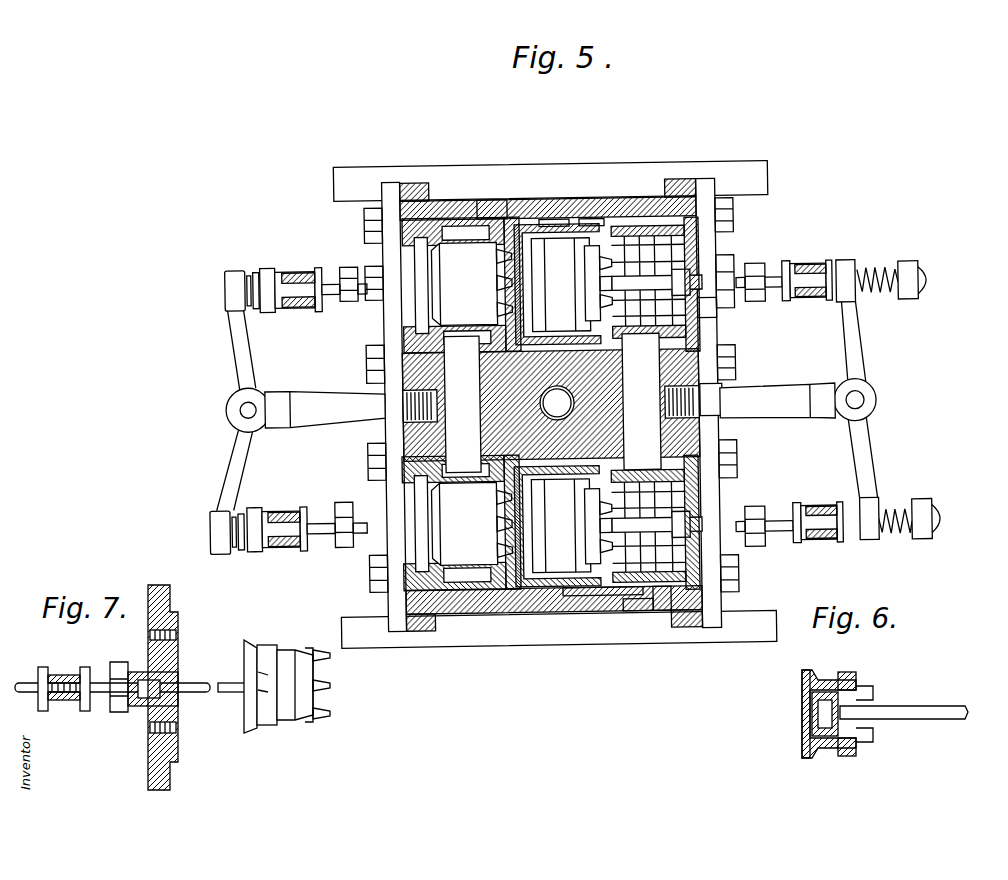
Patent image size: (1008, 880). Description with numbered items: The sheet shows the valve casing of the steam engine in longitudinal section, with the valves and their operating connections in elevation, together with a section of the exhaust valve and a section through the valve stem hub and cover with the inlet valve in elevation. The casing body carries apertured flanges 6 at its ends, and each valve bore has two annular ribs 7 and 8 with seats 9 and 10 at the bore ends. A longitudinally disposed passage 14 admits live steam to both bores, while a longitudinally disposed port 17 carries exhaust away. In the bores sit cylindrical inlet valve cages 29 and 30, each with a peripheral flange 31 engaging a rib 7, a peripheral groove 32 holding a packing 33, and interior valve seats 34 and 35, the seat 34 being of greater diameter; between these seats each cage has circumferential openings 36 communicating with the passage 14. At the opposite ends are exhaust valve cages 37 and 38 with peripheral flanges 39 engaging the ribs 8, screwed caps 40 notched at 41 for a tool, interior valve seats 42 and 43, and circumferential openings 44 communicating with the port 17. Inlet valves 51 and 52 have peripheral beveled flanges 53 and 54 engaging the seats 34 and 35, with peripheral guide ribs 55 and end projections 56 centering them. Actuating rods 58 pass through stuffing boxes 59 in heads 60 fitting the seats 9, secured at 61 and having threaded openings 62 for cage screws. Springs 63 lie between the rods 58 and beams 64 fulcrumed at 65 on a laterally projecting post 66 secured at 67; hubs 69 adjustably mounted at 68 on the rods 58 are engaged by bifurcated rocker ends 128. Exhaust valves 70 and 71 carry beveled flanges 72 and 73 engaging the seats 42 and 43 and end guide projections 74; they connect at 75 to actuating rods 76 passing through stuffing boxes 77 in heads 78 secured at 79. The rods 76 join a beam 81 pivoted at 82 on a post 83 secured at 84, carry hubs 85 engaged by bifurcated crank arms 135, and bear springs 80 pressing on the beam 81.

In FIG. 5, the apertured flanges 6 is at (560, 645).
In FIG. 5, the annular rib 7 is at (513, 600).
In FIG. 5, the annular rib 8 is at (600, 600).
In FIG. 5, the seat 9 is at (412, 632).
In FIG. 5, the seat 10 is at (705, 630).
In FIG. 5, the longitudinally disposed passage 14 is at (551, 405).
In FIG. 5, the longitudinally disposed port 17 is at (666, 313).
In FIG. 5, the inlet valve cage 29 is at (462, 345).
In FIG. 5, the inlet valve cage 30 is at (462, 470).
In FIG. 5, the peripheral flange 31 is at (500, 600).
In FIG. 5, the peripheral groove 32 is at (440, 600).
In FIG. 5, the packing 33 is at (430, 612).
In FIG. 5, the valve seat 34 is at (420, 245).
In FIG. 5, the valve seat 35 is at (492, 200).
In FIG. 5, the bearing block 36 is at (462, 592).
In FIG. 5, the exhaust valve cage 37 is at (640, 240).
In FIG. 5, the exhaust valve cage 38 is at (630, 612).
In FIG. 5, the peripheral flange 39 is at (622, 570).
In FIG. 5, the cap 40 is at (540, 620).
In FIG. 5, the notch 41 is at (540, 500).
In FIG. 5, the valve seat 42 is at (560, 225).
In FIG. 5, the valve seat 43 is at (585, 225).
In FIG. 5, the openings 44 is at (655, 600).
In FIG. 5, the inlet valve 51 is at (471, 283).
In FIG. 5, the inlet valve 52 is at (471, 523).
In FIG. 7, the inlet valve 52 is at (292, 722).
In FIG. 7, the peripheral beveled flange 53 is at (250, 641).
In FIG. 7, the peripheral beveled flange 54 is at (310, 648).
In FIG. 5, the peripheral guide ribs 55 is at (454, 513).
In FIG. 7, the peripheral guide ribs 55 is at (270, 645).
In FIG. 7, the end projections 56 is at (328, 656).
In FIG. 5, the actuating rod 58 is at (333, 284).
In FIG. 7, the actuating rod 58 is at (228, 683).
In FIG. 5, the stuffing box 59 is at (352, 302).
In FIG. 7, the stuffing box 59 is at (118, 662).
In FIG. 5, the head 60 is at (390, 568).
In FIG. 7, the head 60 is at (172, 622).
In FIG. 5, the securing means 61 is at (372, 498).
In FIG. 7, the threaded openings 62 is at (180, 633).
In FIG. 5, the spring 63 is at (248, 275).
In FIG. 5, the beam 64 is at (270, 348).
In FIG. 5, the fulcrum 65 is at (238, 420).
In FIG. 5, the laterally projecting post 66 is at (305, 422).
In FIG. 5, the threaded connection 67 is at (385, 418).
In FIG. 7, the adjustable mounting 68 is at (35, 683).
In FIG. 5, the hub 69 is at (285, 272).
In FIG. 7, the hub 69 is at (58, 672).
In FIG. 5, the exhaust valve 70 is at (571, 284).
In FIG. 6, the exhaust valve 70 is at (806, 714).
In FIG. 5, the exhaust valve 71 is at (571, 525).
In FIG. 5, the peripheral beveled flange 72 is at (600, 590).
In FIG. 6, the peripheral beveled flange 72 is at (812, 676).
In FIG. 6, the peripheral beveled flange 73 is at (850, 680).
In FIG. 5, the end guide projection 74 is at (640, 482).
In FIG. 6, the end guide projection 74 is at (872, 690).
In FIG. 6, the connection 75 is at (812, 722).
In FIG. 5, the actuating rod 76 is at (774, 280).
In FIG. 6, the actuating rod 76 is at (900, 706).
In FIG. 5, the stuffing box 77 is at (750, 270).
In FIG. 5, the head 78 is at (720, 570).
In FIG. 5, the securing means 79 is at (740, 600).
In FIG. 5, the spring 80 is at (885, 268).
In FIG. 5, the beam 81 is at (860, 360).
In FIG. 5, the pivot 82 is at (858, 398).
In FIG. 5, the laterally projecting post 83 is at (795, 416).
In FIG. 5, the securing point 84 is at (722, 395).
In FIG. 5, the hub 85 is at (824, 255).
In FIG. 5, the bifurcated end 128 is at (303, 306).
In FIG. 5, the bifurcated crank arm 135 is at (810, 300).